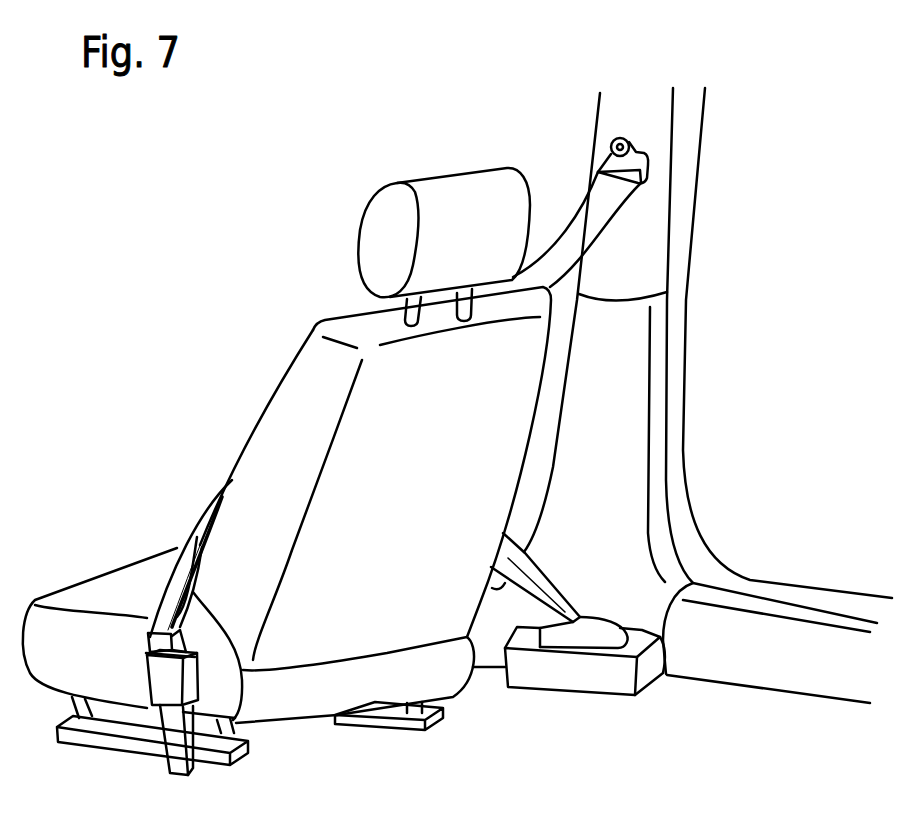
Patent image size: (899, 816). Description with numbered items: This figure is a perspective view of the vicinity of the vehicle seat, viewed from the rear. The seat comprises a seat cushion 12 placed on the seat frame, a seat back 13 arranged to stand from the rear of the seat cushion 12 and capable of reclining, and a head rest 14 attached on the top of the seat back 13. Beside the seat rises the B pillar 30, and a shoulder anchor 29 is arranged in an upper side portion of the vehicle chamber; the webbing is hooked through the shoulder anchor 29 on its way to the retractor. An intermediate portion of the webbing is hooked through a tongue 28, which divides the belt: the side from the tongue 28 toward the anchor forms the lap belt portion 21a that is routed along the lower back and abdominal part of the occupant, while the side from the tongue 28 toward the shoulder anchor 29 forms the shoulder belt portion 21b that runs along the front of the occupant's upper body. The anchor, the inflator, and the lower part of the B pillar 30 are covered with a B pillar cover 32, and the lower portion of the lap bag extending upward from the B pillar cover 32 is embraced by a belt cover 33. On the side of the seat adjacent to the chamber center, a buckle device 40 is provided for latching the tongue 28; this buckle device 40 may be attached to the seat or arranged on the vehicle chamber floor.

The seat cushion 12 is at (100, 590).
The seat back 13 is at (307, 377).
The head rest 14 is at (375, 228).
The lap belt portion 21a is at (193, 598).
The shoulder belt portion 21b is at (560, 263).
The tongue 28 is at (147, 647).
The shoulder anchor 29 is at (610, 162).
The B pillar 30 is at (650, 120).
The B pillar cover 32 is at (523, 677).
The belt cover 33 is at (533, 592).
The buckle device 40 is at (131, 682).